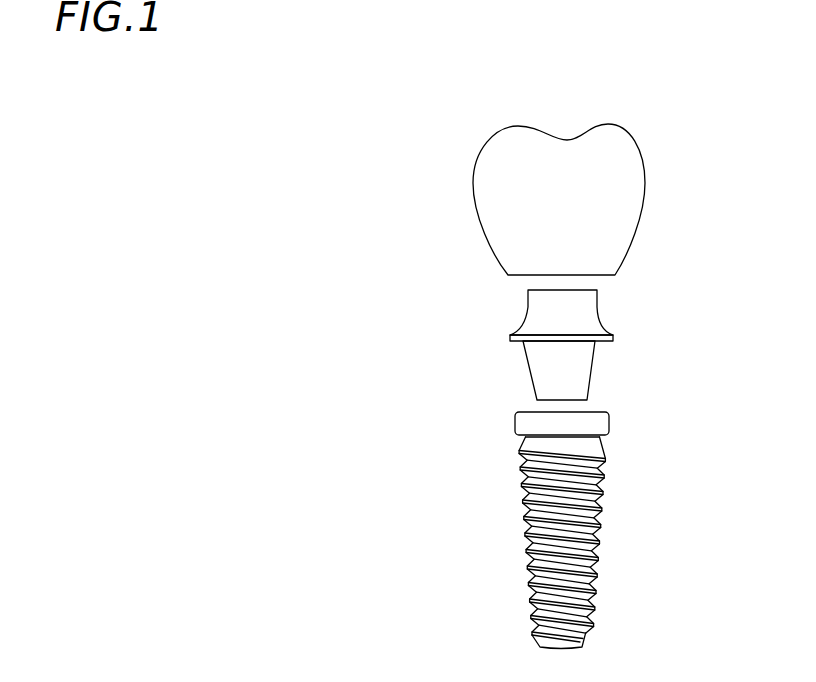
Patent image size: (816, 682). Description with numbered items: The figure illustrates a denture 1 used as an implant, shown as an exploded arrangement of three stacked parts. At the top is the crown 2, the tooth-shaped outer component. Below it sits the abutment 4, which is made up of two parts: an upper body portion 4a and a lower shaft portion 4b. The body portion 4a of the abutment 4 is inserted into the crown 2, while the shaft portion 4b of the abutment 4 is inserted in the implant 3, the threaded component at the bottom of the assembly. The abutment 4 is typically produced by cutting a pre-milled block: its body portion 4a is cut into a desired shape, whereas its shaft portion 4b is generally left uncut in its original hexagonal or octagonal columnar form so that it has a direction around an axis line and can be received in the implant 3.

The denture 1 is at (697, 145).
The crown 2 is at (443, 202).
The implant 3 is at (443, 505).
The abutment 4 is at (443, 340).
The body portion 4a is at (598, 307).
The shaft portion 4b is at (594, 365).